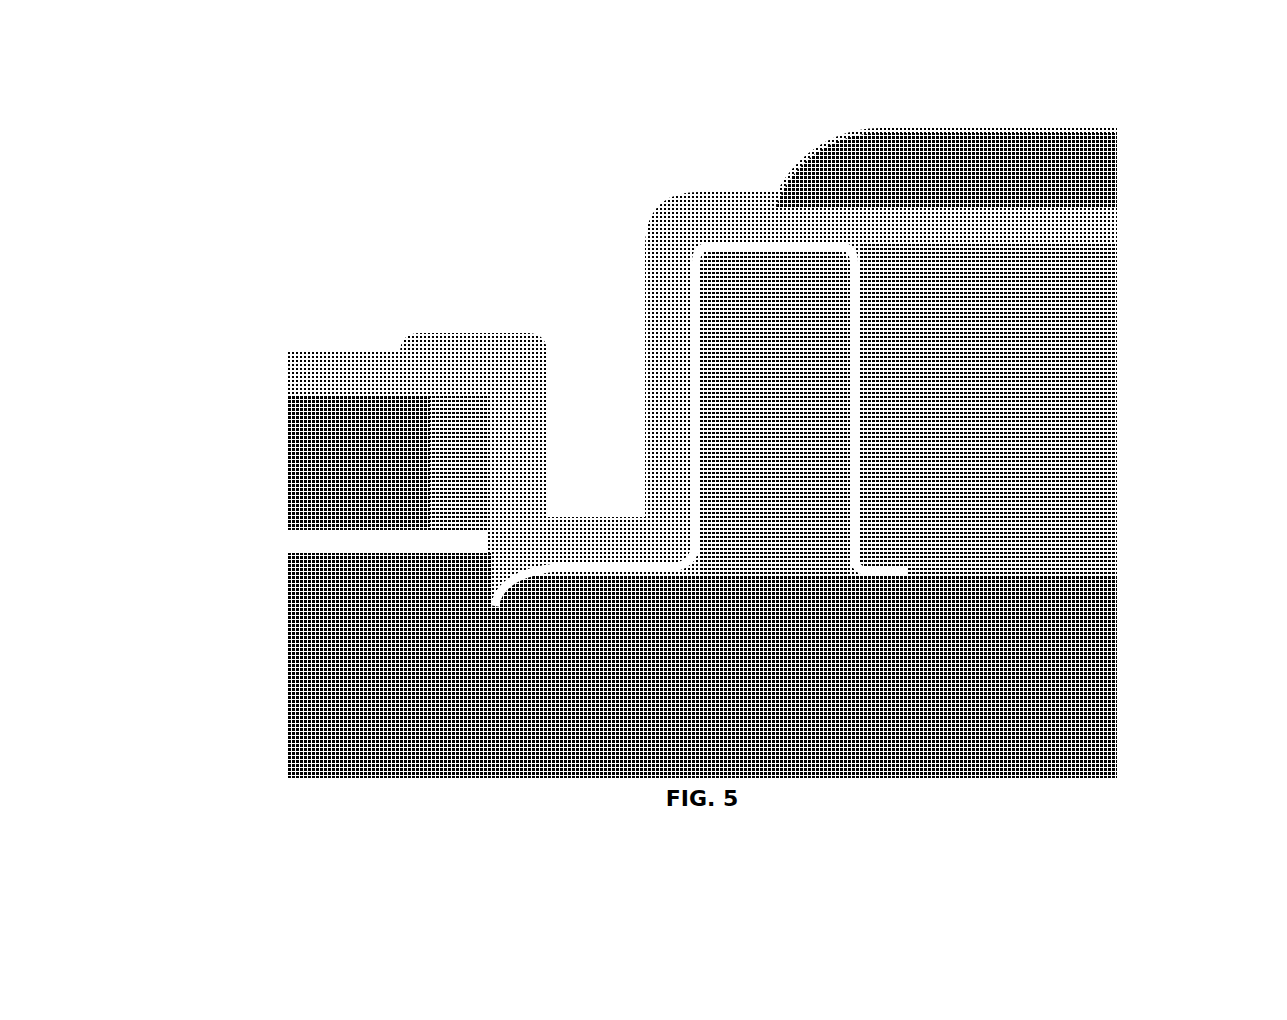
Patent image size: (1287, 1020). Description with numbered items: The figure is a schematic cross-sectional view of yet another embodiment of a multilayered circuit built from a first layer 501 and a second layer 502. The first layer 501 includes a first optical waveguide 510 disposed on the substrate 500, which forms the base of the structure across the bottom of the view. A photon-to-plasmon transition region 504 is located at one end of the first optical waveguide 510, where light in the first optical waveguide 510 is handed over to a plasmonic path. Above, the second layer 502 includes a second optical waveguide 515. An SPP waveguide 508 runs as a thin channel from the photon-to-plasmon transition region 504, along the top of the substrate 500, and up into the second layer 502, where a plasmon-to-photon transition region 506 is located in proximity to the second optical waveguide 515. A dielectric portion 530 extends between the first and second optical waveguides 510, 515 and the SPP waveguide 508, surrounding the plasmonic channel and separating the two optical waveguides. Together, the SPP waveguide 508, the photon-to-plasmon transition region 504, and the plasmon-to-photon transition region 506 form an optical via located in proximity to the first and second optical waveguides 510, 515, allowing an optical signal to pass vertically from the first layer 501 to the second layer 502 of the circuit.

The substrate 500 is at (702, 665).
The first layer 501 is at (628, 496).
The second layer 502 is at (888, 313).
The photon-to-plasmon transition region 504 is at (313, 377).
The plasmon-to-photon transition region 506 is at (816, 147).
The SPP waveguide 508 is at (670, 445).
The first optical waveguide 510 is at (428, 546).
The second optical waveguide 515 is at (892, 216).
The dielectric portion 530 is at (293, 355).